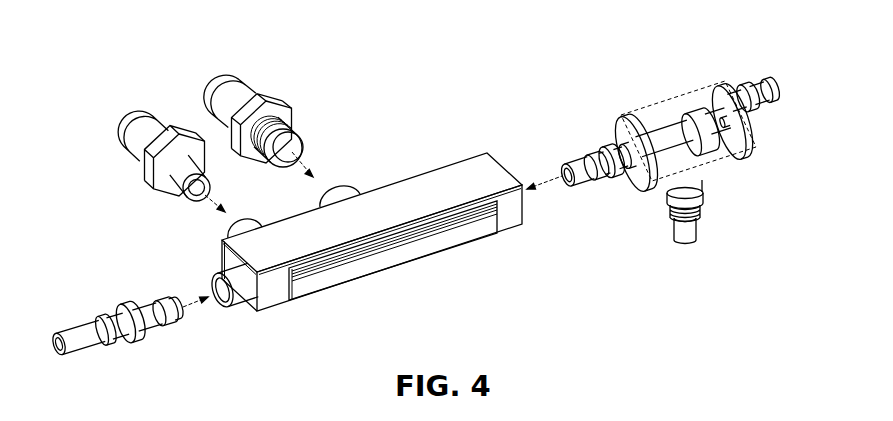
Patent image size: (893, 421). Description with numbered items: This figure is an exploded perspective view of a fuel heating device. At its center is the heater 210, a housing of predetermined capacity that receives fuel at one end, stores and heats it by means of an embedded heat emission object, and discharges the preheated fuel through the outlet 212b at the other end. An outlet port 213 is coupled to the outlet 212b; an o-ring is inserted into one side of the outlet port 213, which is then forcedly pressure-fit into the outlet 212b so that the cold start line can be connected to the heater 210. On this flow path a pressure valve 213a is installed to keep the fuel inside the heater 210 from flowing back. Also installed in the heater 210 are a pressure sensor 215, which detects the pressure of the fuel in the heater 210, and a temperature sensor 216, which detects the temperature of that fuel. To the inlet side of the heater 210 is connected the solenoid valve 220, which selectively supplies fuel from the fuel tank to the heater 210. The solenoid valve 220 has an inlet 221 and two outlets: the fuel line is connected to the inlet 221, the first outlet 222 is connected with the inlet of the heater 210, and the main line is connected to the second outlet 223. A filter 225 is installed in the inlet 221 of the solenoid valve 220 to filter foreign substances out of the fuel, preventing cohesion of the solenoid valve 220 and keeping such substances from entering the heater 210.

The heater 210 is at (447, 157).
The outlet 212b is at (240, 297).
The outlet port 213 is at (128, 288).
The pressure valve 213a is at (108, 317).
The pressure sensor 215 is at (127, 110).
The temperature sensor 216 is at (223, 70).
The solenoid valve 220 is at (663, 114).
The inlet 221 is at (678, 228).
The first outlet 222 is at (583, 167).
The second outlet 223 is at (768, 93).
The filter 225 is at (702, 181).